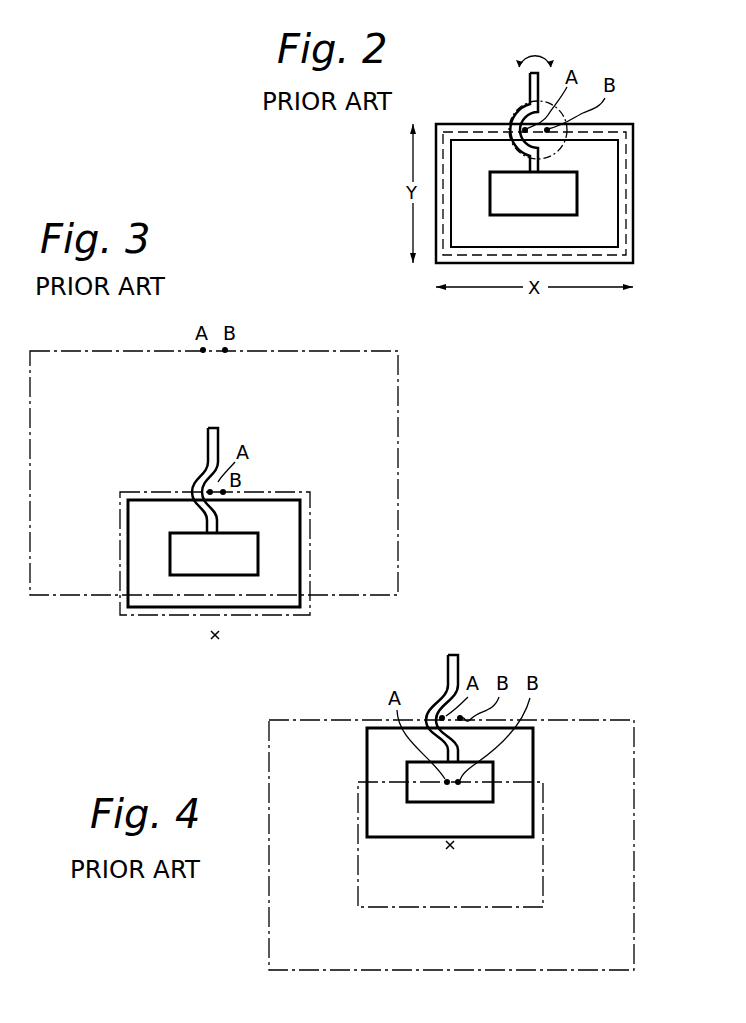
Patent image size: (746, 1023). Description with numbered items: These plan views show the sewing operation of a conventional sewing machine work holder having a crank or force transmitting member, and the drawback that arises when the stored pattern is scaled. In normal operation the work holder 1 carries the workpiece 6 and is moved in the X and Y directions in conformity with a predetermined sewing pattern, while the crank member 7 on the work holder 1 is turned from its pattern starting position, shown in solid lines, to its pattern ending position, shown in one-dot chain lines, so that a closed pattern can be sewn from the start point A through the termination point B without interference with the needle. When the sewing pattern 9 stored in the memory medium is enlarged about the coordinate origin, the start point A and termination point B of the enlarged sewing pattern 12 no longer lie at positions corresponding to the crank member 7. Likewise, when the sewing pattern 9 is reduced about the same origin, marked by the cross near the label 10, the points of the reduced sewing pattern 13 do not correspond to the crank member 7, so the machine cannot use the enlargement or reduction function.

In FIG. 2, the work holder 1 is at (600, 148).
In FIG. 3, the work holder 1 is at (296, 560).
In FIG. 4, the work holder 1 is at (537, 728).
In FIG. 2, the workpiece 6 is at (635, 156).
In FIG. 2, the crank member 7 is at (513, 112).
In FIG. 3, the crank member 7 is at (194, 484).
In FIG. 4, the crank member 7 is at (435, 705).
In FIG. 3, the sewing pattern 9 is at (302, 487).
In FIG. 4, the sewing pattern 9 is at (635, 762).
In FIG. 3, the reference position mark 10 is at (213, 642).
In FIG. 4, the reference position mark 10 is at (450, 853).
In FIG. 3, the enlarged sewing pattern 12 is at (398, 408).
In FIG. 4, the reduced sewing pattern 13 is at (545, 844).